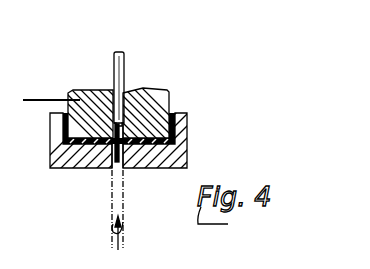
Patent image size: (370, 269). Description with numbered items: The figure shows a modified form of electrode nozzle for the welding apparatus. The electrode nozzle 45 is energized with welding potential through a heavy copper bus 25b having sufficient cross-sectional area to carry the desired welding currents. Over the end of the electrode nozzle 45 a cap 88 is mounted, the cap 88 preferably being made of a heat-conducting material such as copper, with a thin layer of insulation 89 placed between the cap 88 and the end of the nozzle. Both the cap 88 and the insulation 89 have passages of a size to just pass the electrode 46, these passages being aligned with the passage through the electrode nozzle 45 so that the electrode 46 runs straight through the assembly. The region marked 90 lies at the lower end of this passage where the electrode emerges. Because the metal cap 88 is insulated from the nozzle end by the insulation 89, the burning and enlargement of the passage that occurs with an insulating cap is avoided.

The bus 25b is at (50, 100).
The electrode 46 is at (125, 70).
The electrode nozzle 45 is at (167, 98).
The insulation 89 is at (173, 127).
The cap 88 is at (182, 155).
The pin tip 90 is at (112, 162).